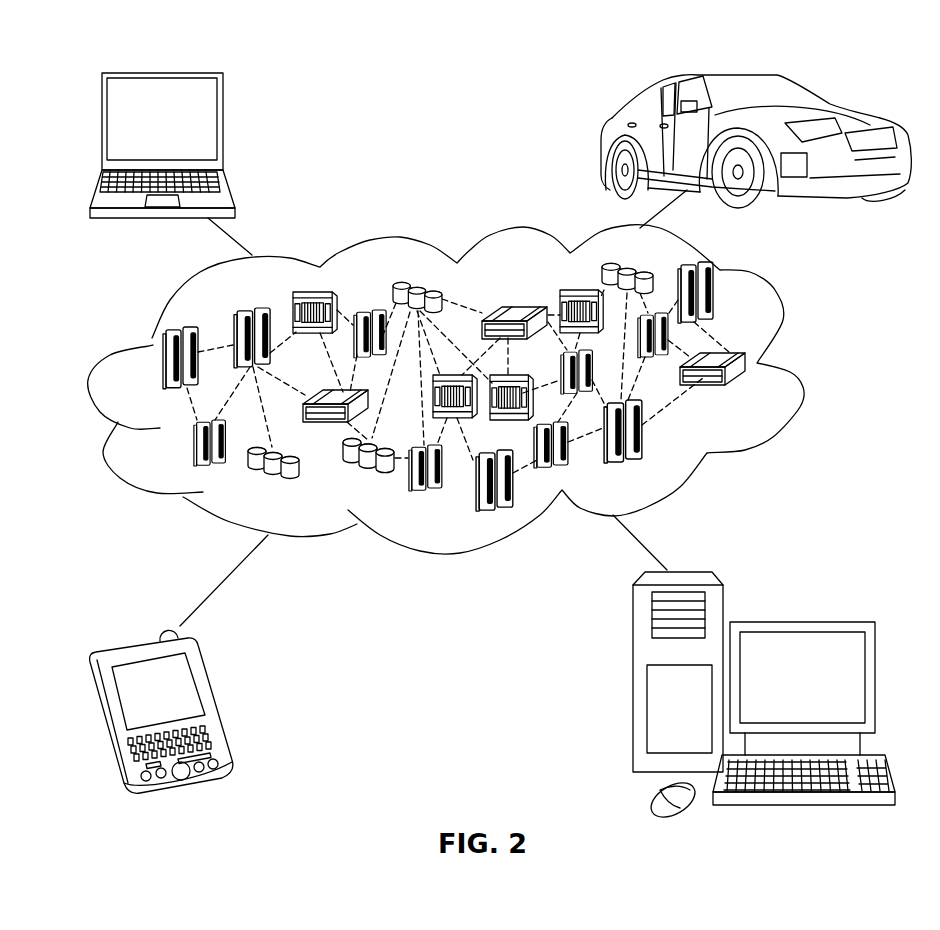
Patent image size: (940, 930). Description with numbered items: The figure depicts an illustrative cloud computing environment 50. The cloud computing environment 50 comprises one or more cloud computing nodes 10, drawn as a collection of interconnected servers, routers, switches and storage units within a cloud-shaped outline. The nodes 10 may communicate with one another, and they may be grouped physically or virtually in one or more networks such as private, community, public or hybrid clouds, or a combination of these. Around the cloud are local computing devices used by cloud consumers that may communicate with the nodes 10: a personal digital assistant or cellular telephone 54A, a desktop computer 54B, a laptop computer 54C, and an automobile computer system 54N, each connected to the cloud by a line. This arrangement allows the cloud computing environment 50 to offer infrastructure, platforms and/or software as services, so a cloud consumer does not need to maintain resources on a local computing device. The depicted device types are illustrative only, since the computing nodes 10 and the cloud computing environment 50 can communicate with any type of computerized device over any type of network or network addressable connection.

The cloud computing nodes 10 is at (748, 392).
The cloud computing environment 50 is at (800, 367).
The personal digital assistant or cellular telephone 54A is at (212, 704).
The desktop computer 54B is at (800, 622).
The laptop computer 54C is at (223, 124).
The automobile computer system 54N is at (606, 139).